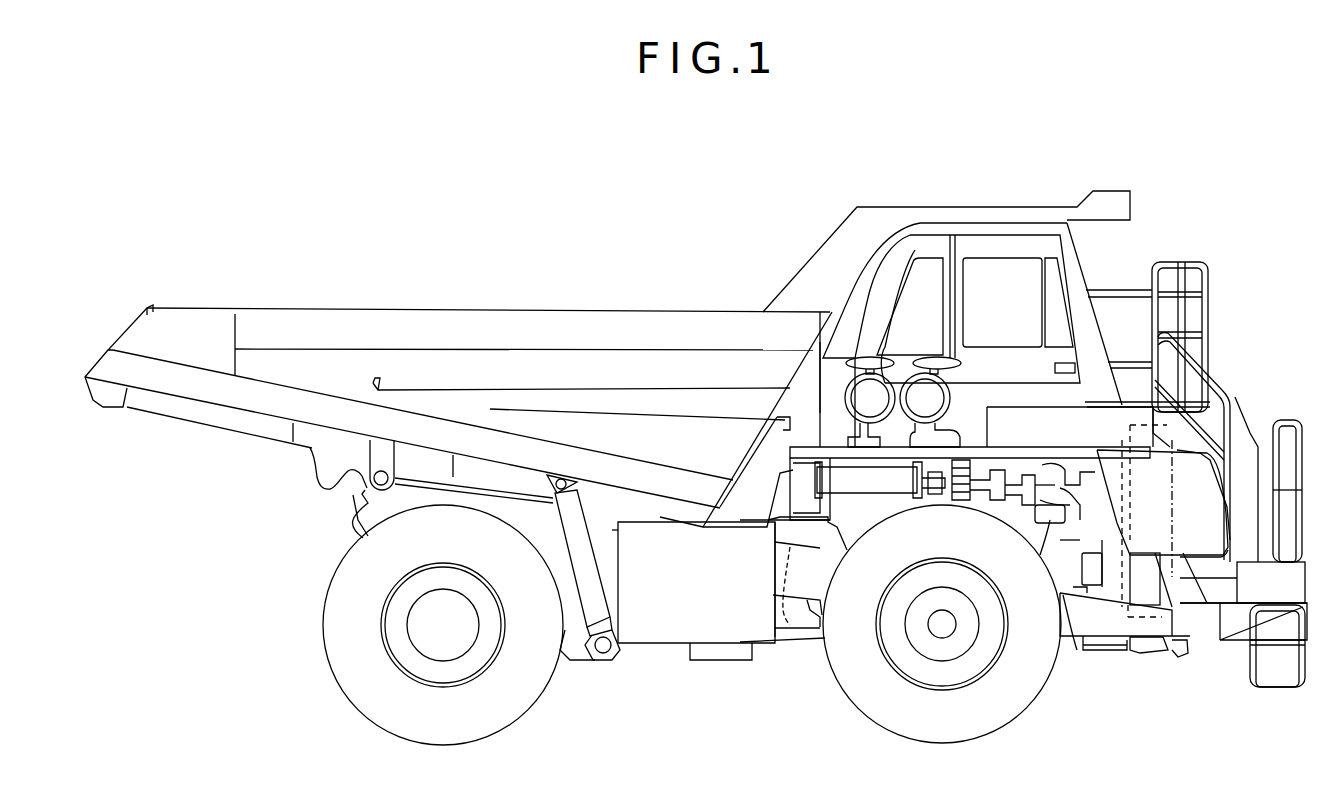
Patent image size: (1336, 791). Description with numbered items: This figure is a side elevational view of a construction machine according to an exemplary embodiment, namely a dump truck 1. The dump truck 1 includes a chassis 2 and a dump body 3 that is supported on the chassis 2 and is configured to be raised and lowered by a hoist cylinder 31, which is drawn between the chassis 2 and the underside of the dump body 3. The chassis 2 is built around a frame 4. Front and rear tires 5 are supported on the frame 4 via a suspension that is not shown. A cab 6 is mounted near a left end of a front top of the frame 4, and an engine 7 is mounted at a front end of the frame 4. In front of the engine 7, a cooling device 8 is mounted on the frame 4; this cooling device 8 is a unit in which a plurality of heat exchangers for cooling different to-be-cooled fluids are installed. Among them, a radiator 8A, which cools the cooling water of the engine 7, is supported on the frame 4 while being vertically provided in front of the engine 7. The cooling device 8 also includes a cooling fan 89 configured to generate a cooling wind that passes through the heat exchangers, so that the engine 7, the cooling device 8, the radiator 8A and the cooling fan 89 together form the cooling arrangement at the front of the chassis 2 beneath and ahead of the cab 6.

The dump truck 1 is at (917, 125).
The chassis 2 is at (1240, 328).
The dump body 3 is at (430, 308).
The frame 4 is at (822, 615).
The front and rear tires 5 is at (545, 695).
The cab 6 is at (1075, 250).
The engine 7 is at (1080, 627).
The cooling device 8 is at (1185, 497).
The radiator 8A is at (1170, 652).
The cooling fan 89 is at (1115, 613).
The hoist cylinder 31 is at (615, 590).